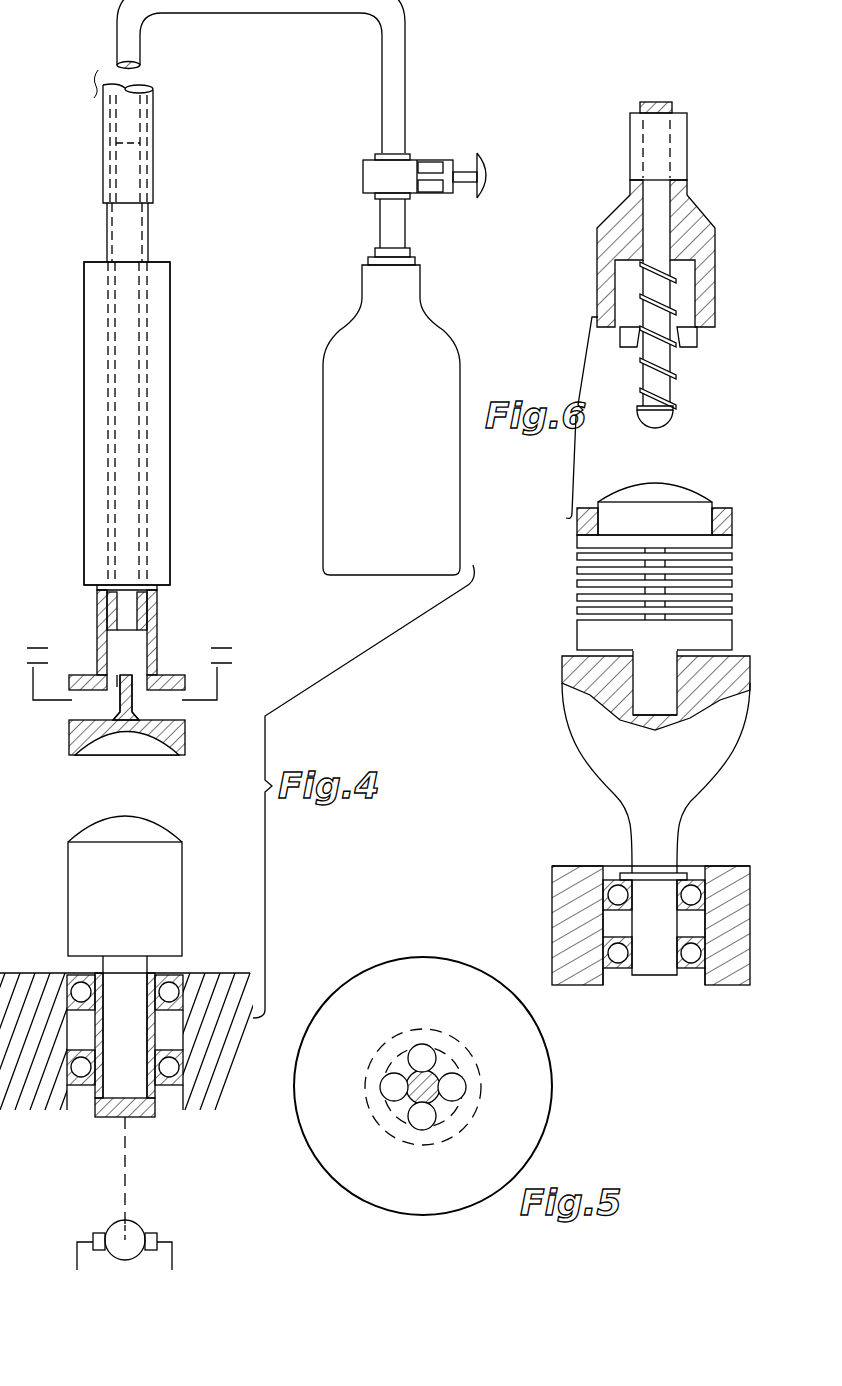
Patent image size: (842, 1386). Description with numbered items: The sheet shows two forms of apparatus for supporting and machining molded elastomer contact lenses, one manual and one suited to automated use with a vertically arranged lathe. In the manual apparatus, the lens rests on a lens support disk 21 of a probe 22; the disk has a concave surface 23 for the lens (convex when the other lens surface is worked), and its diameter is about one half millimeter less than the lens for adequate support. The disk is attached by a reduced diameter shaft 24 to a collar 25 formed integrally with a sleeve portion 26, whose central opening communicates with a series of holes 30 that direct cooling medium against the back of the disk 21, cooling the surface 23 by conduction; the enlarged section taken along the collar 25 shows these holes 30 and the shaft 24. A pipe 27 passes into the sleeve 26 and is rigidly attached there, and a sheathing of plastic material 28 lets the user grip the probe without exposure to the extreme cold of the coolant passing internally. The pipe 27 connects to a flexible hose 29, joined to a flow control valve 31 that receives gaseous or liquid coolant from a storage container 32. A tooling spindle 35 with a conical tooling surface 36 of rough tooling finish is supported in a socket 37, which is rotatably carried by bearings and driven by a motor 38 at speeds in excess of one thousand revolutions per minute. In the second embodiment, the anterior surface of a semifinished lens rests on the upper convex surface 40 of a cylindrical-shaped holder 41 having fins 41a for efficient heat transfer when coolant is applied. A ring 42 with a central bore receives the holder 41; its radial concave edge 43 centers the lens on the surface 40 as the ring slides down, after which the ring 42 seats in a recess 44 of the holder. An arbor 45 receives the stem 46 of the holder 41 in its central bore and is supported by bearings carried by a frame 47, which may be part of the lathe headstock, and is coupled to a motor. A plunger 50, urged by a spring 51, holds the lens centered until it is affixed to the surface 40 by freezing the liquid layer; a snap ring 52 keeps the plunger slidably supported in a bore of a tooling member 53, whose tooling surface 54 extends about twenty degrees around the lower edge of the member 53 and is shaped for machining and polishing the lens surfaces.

In FIG. 4, the lens support disk 21 is at (187, 740).
In FIG. 4, the probe 22 is at (170, 518).
In FIG. 4, the concave surface 23 is at (105, 735).
In FIG. 4, the reduced diameter shaft 24 is at (137, 712).
In FIG. 5, the reduced diameter shaft 24 is at (440, 1103).
In FIG. 4, the collar 25 is at (174, 673).
In FIG. 5, the collar 25 is at (535, 1050).
In FIG. 4, the sleeve portion 26 is at (158, 608).
In FIG. 4, the pipe 27 is at (150, 237).
In FIG. 5, the pipe 27 is at (450, 1078).
In FIG. 4, the sheathing of plastic material 28 is at (164, 428).
In FIG. 4, the flexible hose 29 is at (155, 117).
In FIG. 4, the holes 30 is at (117, 687).
In FIG. 4, the flow control valve 31 is at (445, 160).
In FIG. 4, the storage container 32 is at (399, 436).
In FIG. 4, the tooling spindle 35 is at (176, 872).
In FIG. 4, the conical tooling surface 36 is at (158, 825).
In FIG. 4, the socket 37 is at (150, 1117).
In FIG. 4, the motor 38 is at (140, 1225).
In FIG. 6, the upper convex surface 40 is at (675, 488).
In FIG. 6, the cylindrical-shaped holder 41 is at (735, 632).
In FIG. 6, the fins 41a is at (732, 598).
In FIG. 6, the ring 42 is at (732, 540).
In FIG. 6, the radial concave edge 43 is at (722, 512).
In FIG. 6, the recess 44 is at (672, 705).
In FIG. 6, the arbor 45 is at (722, 750).
In FIG. 6, the stem 46 is at (668, 694).
In FIG. 6, the frame 47 is at (572, 866).
In FIG. 6, the plunger 50 is at (670, 420).
In FIG. 6, the spring 51 is at (676, 373).
In FIG. 6, the snap ring 52 is at (675, 107).
In FIG. 6, the tooling member 53 is at (712, 228).
In FIG. 6, the tooling surface 54 is at (690, 343).